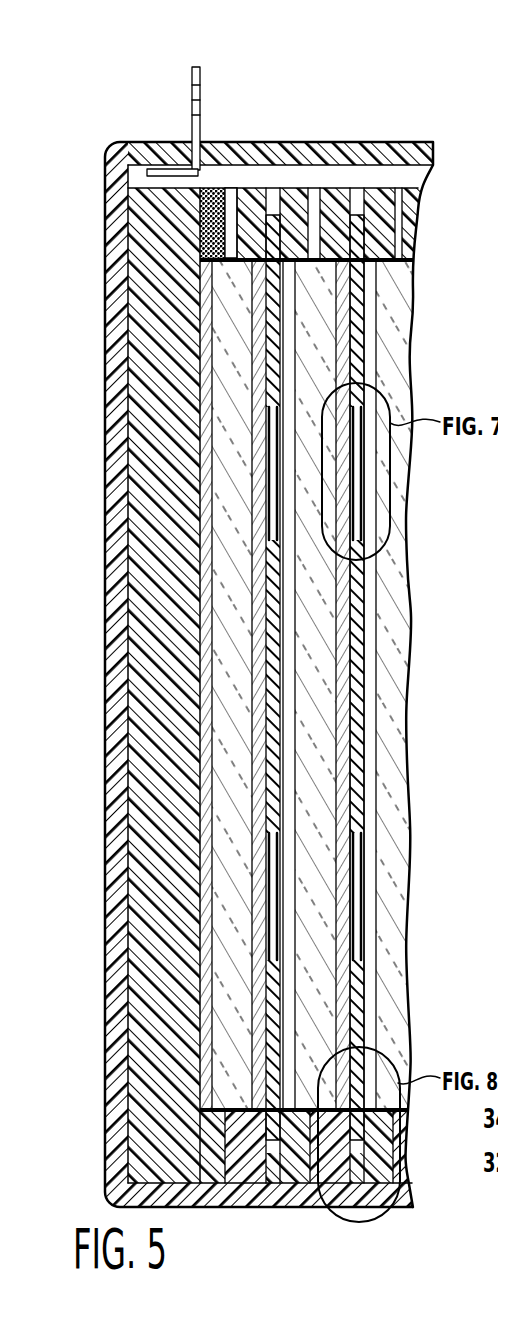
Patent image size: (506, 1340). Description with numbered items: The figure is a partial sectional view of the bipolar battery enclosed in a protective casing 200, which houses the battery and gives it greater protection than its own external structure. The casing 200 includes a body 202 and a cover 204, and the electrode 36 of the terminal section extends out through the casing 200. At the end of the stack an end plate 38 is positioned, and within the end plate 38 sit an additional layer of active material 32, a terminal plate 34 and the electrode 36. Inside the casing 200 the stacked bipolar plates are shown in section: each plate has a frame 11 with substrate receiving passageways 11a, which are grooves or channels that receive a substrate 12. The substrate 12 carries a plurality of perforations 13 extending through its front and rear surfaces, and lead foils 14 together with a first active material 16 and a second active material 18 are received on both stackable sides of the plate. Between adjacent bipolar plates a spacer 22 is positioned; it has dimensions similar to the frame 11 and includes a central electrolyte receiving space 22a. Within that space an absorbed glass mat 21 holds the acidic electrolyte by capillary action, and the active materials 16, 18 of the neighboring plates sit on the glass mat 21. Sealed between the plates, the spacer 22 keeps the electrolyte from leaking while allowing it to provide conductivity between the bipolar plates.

The protective casing 200 is at (96, 224).
The body 202 is at (368, 141).
The cover 204 is at (105, 1013).
The electrode 36 is at (197, 67).
The end plate 38 is at (175, 1178).
The terminal plate 34 is at (200, 1080).
The active material 32 is at (205, 1040).
The electrolyte receiving space 22a is at (229, 192).
The spacer 22 is at (268, 196).
The frame 11 is at (340, 196).
The substrate receiving passageways 11a is at (370, 192).
The glass mat 21 is at (245, 659).
The substrate 12 is at (360, 582).
The lead foils 14 is at (365, 666).
The perforations 13 is at (368, 882).
The first active material 16 is at (345, 721).
The second active material 18 is at (370, 756).